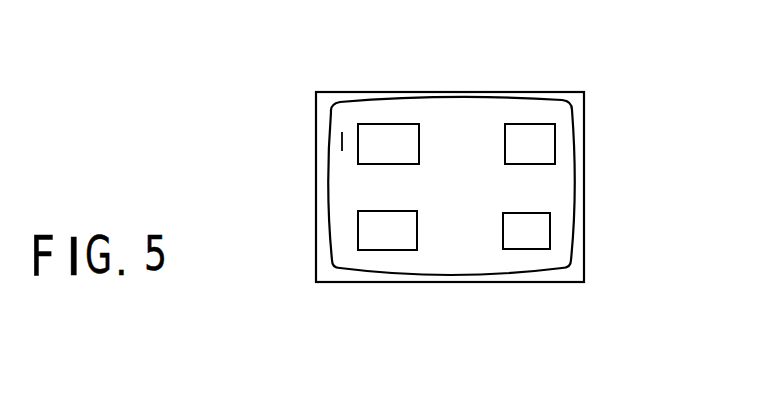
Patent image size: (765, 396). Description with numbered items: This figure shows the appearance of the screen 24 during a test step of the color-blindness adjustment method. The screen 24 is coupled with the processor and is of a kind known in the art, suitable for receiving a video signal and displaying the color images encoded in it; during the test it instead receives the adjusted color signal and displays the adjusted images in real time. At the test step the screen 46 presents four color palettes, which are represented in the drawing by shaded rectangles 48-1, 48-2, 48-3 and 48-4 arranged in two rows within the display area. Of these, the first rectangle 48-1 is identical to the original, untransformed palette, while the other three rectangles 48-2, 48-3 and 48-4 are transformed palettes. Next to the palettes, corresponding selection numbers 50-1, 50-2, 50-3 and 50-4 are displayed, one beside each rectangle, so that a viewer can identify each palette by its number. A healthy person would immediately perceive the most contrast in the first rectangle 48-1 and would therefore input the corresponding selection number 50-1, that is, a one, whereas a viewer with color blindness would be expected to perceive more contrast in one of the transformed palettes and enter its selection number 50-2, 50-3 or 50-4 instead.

The screen 24 is at (584, 100).
The screen 46 is at (460, 196).
The shaded rectangle 48-1 is at (388, 140).
The shaded rectangle 48-2 is at (532, 140).
The shaded rectangle 48-3 is at (387, 240).
The shaded rectangle 48-4 is at (523, 240).
The selection number 50-1 is at (337, 142).
The selection number 50-2 is at (471, 128).
The selection number 50-3 is at (338, 228).
The selection number 50-4 is at (472, 240).